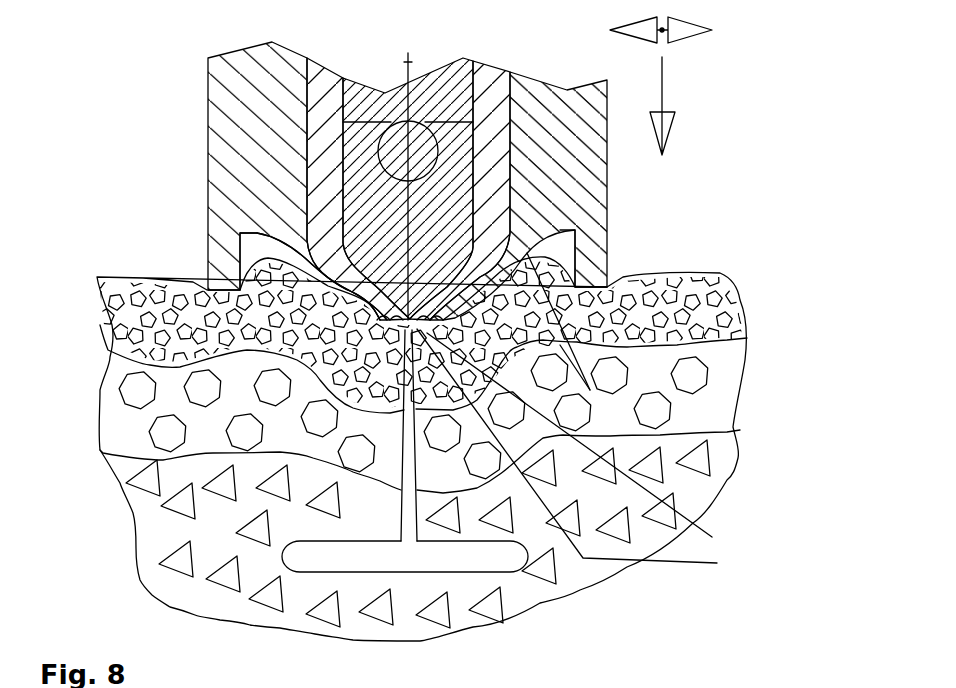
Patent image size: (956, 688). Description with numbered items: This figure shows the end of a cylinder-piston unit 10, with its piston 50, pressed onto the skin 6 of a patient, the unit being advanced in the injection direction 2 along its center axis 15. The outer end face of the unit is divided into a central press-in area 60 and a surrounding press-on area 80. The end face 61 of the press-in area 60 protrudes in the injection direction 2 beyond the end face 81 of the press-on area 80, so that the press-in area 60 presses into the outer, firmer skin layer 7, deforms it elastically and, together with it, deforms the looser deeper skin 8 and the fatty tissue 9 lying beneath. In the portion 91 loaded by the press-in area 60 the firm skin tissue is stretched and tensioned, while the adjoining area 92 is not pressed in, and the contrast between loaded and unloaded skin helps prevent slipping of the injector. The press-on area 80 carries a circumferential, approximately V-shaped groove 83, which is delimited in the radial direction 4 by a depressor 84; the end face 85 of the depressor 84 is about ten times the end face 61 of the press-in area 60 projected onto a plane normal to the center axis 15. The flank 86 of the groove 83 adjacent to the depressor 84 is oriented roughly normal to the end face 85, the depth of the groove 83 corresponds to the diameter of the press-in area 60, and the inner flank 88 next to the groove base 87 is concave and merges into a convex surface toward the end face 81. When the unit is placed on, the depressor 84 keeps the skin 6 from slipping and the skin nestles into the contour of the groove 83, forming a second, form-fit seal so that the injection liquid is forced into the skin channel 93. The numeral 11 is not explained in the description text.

The injection direction 2 is at (662, 92).
The radial direction 4 is at (664, 31).
The skin 6 is at (104, 312).
The outer firmer skin layer 7 is at (123, 342).
The looser deeper skin 8 is at (135, 422).
The fatty tissue 9 is at (147, 510).
The cylinder-piston unit 10 is at (618, 190).
The device 11 is at (430, 685).
The center axis 15 is at (406, 63).
The piston 50 is at (460, 150).
The press-in area 60 is at (586, 443).
The end face of the press-in area 61 is at (581, 455).
The press-on area 80 is at (590, 390).
The end face of the press-on area 81 is at (592, 390).
The circumferential groove 83 is at (257, 260).
The depressor 84 is at (208, 289).
The end face of the depressor 85 is at (197, 283).
The flank of the groove 86 is at (257, 235).
The groove base 87 is at (223, 290).
The inner flank 88 is at (223, 270).
The loaded skin area 91 is at (390, 338).
The unloaded skin area 92 is at (372, 329).
The skin channel 93 is at (401, 514).